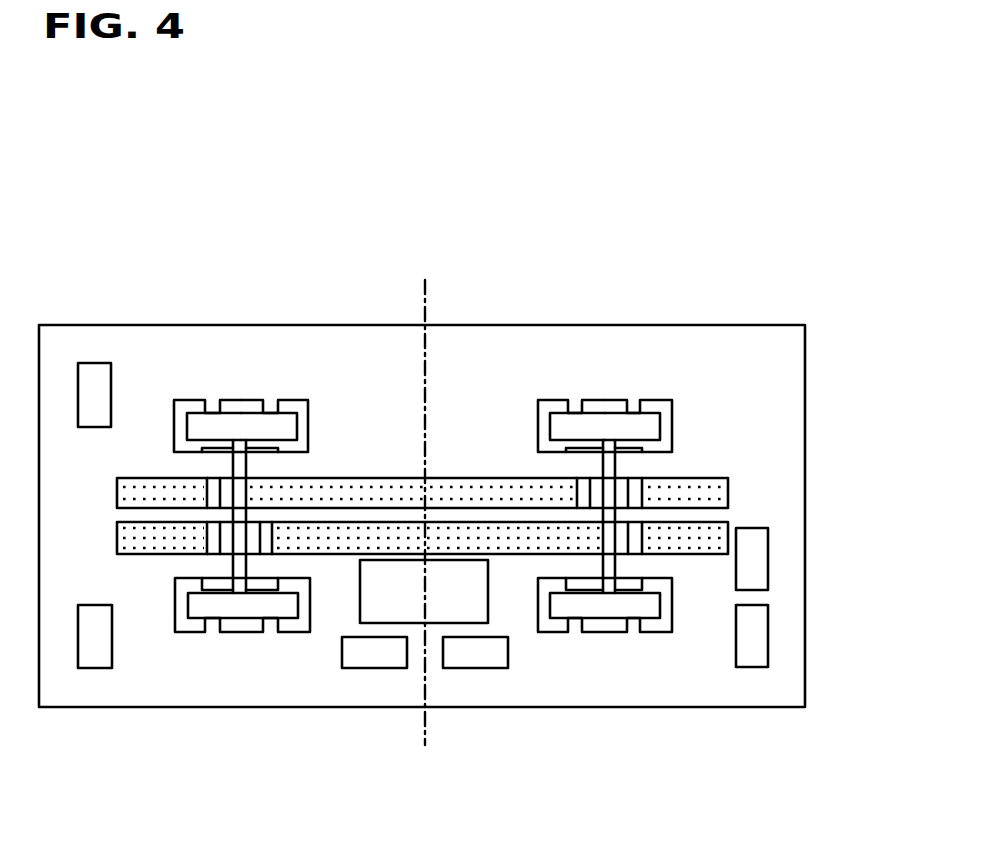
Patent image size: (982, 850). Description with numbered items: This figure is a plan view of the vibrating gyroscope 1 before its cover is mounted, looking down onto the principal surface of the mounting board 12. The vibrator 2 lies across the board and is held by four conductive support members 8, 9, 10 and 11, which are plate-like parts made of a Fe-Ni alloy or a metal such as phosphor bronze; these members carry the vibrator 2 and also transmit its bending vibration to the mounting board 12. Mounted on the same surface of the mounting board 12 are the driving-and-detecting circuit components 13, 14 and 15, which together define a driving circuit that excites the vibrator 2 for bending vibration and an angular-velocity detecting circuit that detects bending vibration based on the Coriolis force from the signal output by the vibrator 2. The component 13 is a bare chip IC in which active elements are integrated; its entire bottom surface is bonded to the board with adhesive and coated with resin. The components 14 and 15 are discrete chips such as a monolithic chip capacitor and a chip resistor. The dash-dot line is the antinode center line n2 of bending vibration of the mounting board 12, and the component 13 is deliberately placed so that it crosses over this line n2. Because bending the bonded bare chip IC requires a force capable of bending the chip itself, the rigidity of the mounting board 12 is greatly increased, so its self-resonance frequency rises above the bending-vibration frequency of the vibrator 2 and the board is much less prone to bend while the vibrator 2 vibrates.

The vibrating gyroscope 1 is at (193, 283).
The vibrator 2 is at (697, 478).
The conductive support member 8 is at (187, 400).
The conductive support member 9 is at (657, 400).
The conductive support member 10 is at (289, 400).
The conductive support member 11 is at (557, 400).
The mounting board 12 is at (448, 325).
The driving-and-detecting circuit component 13 is at (477, 625).
The driving-and-detecting circuit component 14 is at (368, 668).
The driving-and-detecting circuit component 15 is at (90, 363).
The antinode center line n2 is at (420, 305).